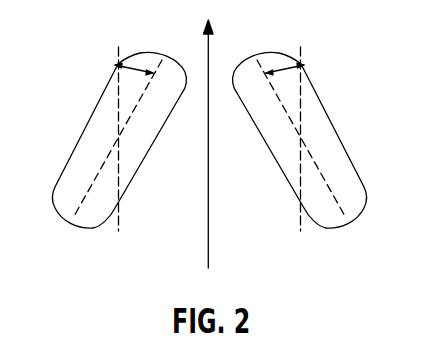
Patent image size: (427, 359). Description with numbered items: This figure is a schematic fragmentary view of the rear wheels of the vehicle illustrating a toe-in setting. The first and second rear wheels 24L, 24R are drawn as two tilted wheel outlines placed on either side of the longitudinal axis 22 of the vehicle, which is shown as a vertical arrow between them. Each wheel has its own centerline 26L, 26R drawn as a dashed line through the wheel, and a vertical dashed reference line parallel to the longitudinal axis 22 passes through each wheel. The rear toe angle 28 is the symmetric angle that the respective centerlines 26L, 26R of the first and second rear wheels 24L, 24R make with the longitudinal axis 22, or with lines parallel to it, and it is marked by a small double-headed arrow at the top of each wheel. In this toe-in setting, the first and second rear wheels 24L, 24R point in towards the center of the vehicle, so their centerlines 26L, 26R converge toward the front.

The longitudinal axis 22 is at (211, 50).
The first rear wheel 24L is at (86, 128).
The second rear wheel 24R is at (323, 112).
The centerline of the first rear wheel 26L is at (88, 195).
The centerline of the second rear wheel 26R is at (340, 205).
The rear toe angle 28 is at (137, 56).